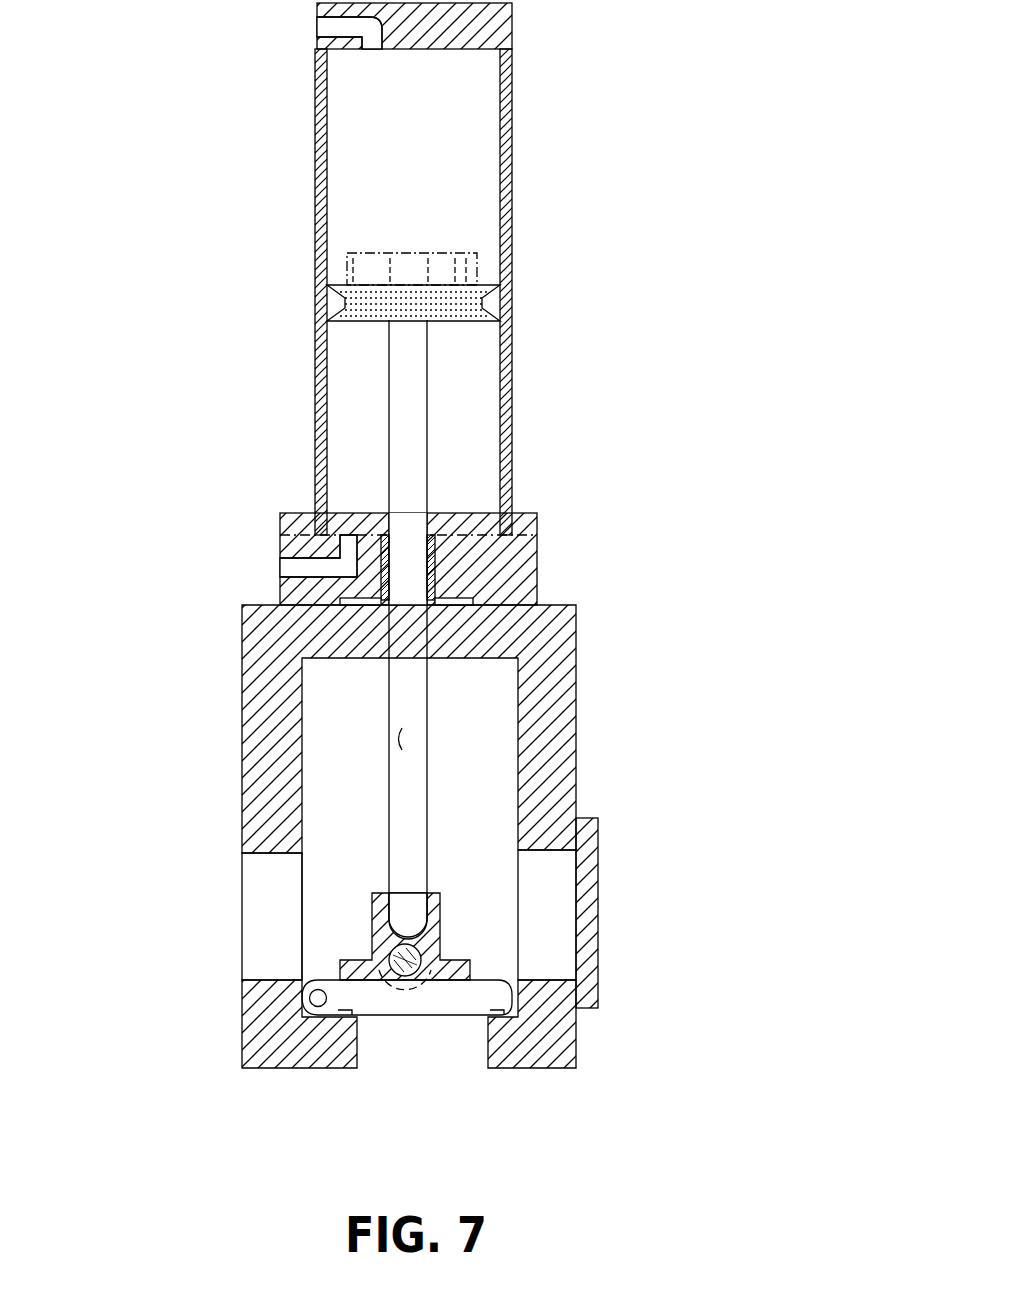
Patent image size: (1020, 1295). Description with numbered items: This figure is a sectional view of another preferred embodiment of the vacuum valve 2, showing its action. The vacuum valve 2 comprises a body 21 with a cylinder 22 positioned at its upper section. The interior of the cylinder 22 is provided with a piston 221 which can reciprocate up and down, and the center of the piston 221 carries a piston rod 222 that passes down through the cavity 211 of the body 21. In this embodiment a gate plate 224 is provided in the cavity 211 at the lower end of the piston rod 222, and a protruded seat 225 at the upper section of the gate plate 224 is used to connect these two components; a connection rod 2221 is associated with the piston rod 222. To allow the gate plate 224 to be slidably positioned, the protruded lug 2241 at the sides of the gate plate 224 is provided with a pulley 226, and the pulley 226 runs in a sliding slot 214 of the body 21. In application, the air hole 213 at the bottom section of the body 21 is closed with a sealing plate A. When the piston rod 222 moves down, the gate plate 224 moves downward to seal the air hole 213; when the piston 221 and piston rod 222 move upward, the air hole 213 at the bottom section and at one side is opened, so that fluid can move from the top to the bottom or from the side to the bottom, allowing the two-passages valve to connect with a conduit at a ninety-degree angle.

The vacuum valve 2 is at (449, 585).
The body 21 is at (409, 840).
The cavity 211 is at (508, 770).
The air hole 213 is at (665, 958).
The sliding slot 214 is at (400, 738).
The cylinder 22 is at (406, 573).
The piston 221 is at (498, 305).
The piston rod 222 is at (412, 463).
The connection rod 2221 is at (643, 913).
The gate plate 224 is at (448, 1002).
The protruded lug 2241 is at (392, 956).
The protruded seat 225 is at (374, 893).
The pulley 226 is at (388, 950).
The sealing plate A is at (639, 1029).